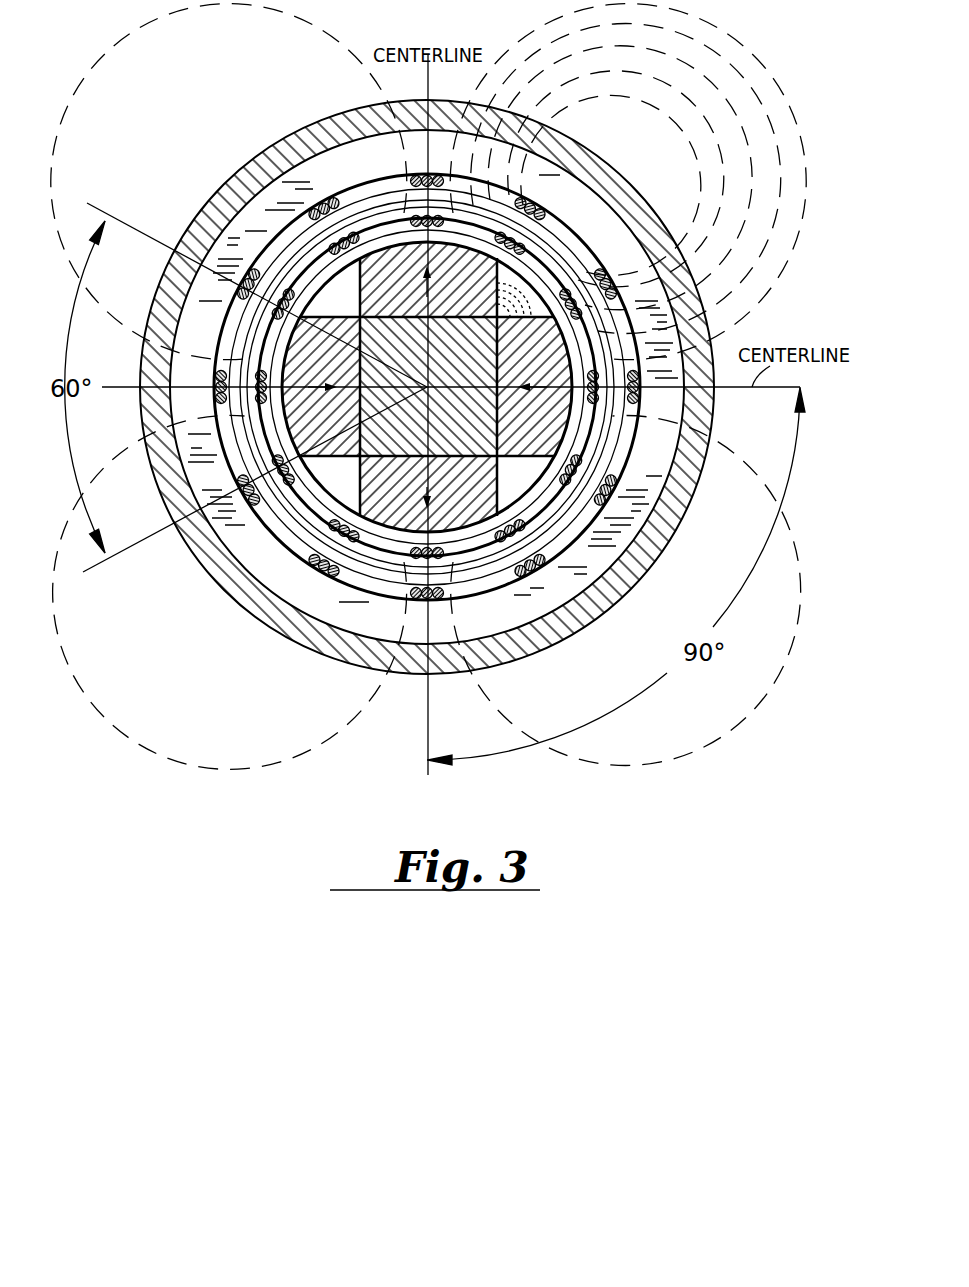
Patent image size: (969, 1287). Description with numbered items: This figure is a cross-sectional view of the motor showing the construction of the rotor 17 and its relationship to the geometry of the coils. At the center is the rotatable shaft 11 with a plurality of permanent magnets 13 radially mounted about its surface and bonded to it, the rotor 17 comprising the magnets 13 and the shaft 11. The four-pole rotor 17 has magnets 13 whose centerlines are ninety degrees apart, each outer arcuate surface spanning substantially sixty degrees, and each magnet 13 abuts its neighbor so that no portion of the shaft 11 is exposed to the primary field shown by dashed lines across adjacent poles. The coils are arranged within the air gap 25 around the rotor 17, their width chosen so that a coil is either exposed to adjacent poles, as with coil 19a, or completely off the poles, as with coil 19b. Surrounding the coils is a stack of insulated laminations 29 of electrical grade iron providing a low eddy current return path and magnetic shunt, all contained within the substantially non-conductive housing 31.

The rotatable shaft 11 is at (375, 386).
The permanent magnets 13 is at (407, 263).
The rotor 17 is at (311, 474).
The coil exposed to adjacent poles 19a is at (540, 230).
The coil off the poles 19b is at (307, 560).
The air gap 25 is at (392, 562).
The insulated laminations 29 is at (280, 213).
The housing 31 is at (215, 213).